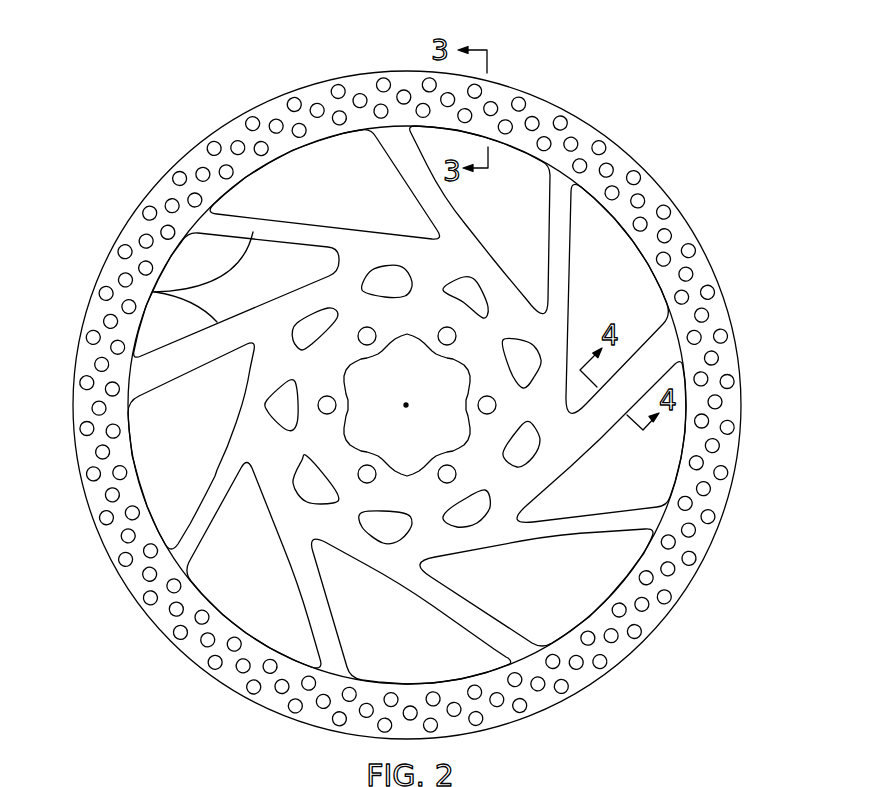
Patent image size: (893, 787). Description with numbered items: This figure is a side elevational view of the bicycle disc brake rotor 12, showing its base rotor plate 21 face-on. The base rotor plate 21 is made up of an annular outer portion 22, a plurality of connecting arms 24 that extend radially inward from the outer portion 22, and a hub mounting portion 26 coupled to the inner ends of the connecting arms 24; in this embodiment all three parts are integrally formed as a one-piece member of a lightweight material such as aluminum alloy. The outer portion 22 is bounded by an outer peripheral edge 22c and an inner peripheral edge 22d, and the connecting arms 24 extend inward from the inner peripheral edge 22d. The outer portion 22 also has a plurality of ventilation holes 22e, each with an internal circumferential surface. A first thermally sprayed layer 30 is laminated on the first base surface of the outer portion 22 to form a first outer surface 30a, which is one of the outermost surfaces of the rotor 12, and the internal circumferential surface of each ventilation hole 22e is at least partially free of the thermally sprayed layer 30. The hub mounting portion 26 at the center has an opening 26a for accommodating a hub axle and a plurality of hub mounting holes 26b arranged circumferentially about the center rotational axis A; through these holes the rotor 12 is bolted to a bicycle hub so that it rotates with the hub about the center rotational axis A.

The bicycle disc brake rotor 12 is at (640, 67).
The base rotor plate 21 is at (34, 245).
The outer portion 22 is at (113, 268).
The outer peripheral edge 22c is at (192, 155).
The inner peripheral edge 22d is at (282, 162).
The ventilation hole 22e is at (537, 116).
The connecting arm 24 is at (153, 292).
The hub mounting portion 26 is at (286, 393).
The opening 26a is at (467, 372).
The hub mounting hole 26b is at (337, 404).
The first thermally sprayed layer 30 is at (718, 320).
The first outer surface 30a is at (652, 196).
The center rotational axis A is at (407, 408).